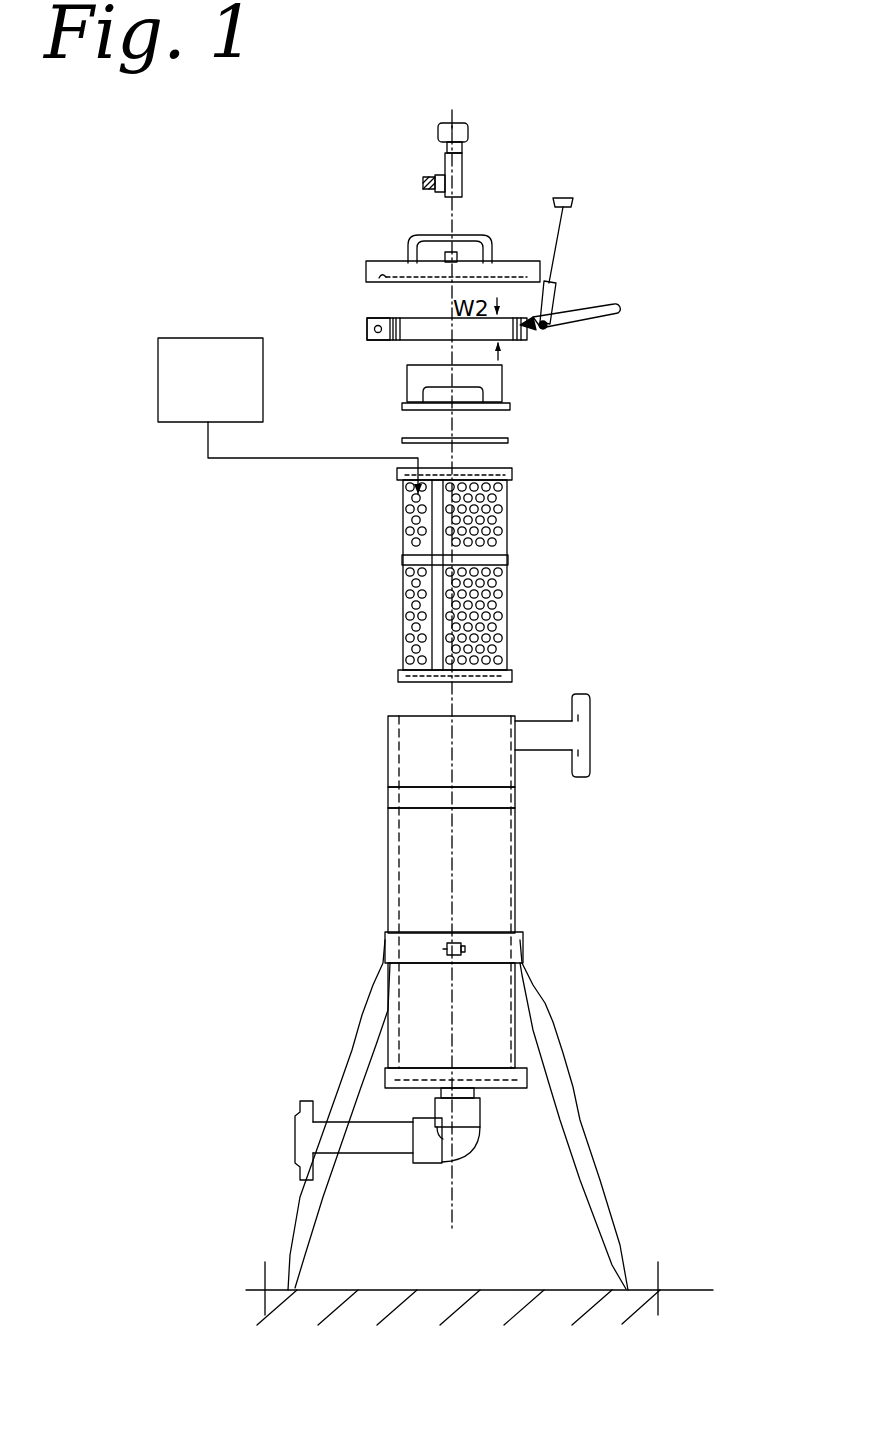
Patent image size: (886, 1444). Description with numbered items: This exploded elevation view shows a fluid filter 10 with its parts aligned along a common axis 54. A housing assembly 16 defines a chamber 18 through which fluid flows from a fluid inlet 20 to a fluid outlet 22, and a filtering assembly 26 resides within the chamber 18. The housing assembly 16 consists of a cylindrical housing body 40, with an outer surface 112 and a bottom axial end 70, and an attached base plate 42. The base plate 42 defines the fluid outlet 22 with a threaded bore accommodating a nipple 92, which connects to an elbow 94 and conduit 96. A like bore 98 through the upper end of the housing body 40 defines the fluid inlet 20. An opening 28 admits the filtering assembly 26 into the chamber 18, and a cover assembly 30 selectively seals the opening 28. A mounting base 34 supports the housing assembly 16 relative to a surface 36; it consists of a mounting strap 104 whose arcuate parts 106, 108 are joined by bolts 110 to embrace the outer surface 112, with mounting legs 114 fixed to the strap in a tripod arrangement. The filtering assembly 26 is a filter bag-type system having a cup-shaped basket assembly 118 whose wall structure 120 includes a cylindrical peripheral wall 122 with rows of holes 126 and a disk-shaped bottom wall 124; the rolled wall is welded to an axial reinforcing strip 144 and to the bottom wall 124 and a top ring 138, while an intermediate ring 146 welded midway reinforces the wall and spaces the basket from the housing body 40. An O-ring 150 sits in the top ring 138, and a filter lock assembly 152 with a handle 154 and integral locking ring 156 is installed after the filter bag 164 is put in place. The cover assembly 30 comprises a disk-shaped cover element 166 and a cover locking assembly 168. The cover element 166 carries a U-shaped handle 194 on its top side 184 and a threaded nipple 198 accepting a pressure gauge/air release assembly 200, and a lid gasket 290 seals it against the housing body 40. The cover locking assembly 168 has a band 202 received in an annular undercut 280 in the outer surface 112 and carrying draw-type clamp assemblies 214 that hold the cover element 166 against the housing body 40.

The fluid filter 10 is at (670, 622).
The housing assembly 16 is at (482, 892).
The chamber 18 is at (399, 749).
The fluid inlet 20 is at (451, 751).
The fluid outlet 22 is at (440, 1075).
The filtering assembly 26 is at (540, 538).
The opening 28 is at (399, 729).
The cover assembly 30 is at (583, 303).
The mounting base 34 is at (588, 1123).
The surface 36 is at (543, 1290).
The housing body 40 is at (515, 918).
The base plate 42 is at (493, 1090).
The longitudinal axis 54 is at (453, 850).
The bottom axial end 70 is at (390, 1054).
The nipple 92 is at (480, 1087).
The elbow 94 is at (432, 1163).
The conduit 96 is at (392, 1162).
The bore 98 is at (590, 722).
The mounting strap 104 is at (498, 955).
The arcuate part 106 is at (517, 906).
The arcuate part 108 is at (417, 945).
The bolts 110 is at (447, 945).
The outer surface 112 is at (517, 928).
The mounting legs 114 is at (350, 1088).
The basket assembly 118 is at (507, 610).
The wall structure 120 is at (460, 567).
The peripheral wall 122 is at (403, 520).
The bottom wall 124 is at (432, 681).
The holes 126 is at (508, 500).
The top ring 138 is at (473, 467).
The reinforcing strip 144 is at (405, 572).
The intermediate ring 146 is at (508, 558).
The O-ring 150 is at (507, 440).
The filter lock assembly 152 is at (406, 385).
The handle 154 is at (473, 373).
The locking ring 156 is at (507, 405).
The filter bag 164 is at (290, 416).
The cover element 166 is at (521, 261).
The cover locking assembly 168 is at (592, 310).
The top side 184 is at (558, 277).
The handle 194 is at (503, 257).
The nipple 198 is at (366, 261).
The pressure gauge/air release assembly 200 is at (466, 153).
The band 202 is at (405, 317).
The draw-type clamp assemblies 214 is at (585, 272).
The undercut 280 is at (430, 790).
The lid gasket 290 is at (366, 281).